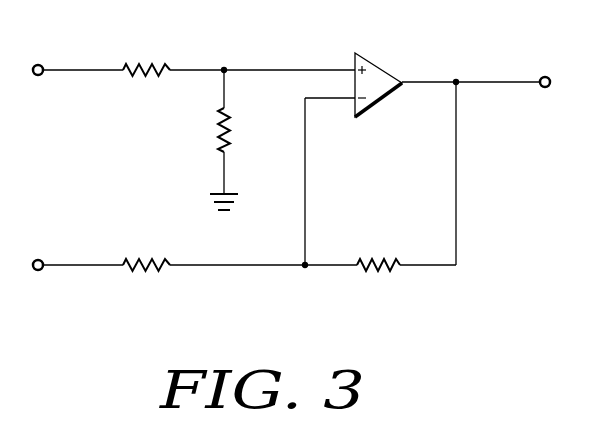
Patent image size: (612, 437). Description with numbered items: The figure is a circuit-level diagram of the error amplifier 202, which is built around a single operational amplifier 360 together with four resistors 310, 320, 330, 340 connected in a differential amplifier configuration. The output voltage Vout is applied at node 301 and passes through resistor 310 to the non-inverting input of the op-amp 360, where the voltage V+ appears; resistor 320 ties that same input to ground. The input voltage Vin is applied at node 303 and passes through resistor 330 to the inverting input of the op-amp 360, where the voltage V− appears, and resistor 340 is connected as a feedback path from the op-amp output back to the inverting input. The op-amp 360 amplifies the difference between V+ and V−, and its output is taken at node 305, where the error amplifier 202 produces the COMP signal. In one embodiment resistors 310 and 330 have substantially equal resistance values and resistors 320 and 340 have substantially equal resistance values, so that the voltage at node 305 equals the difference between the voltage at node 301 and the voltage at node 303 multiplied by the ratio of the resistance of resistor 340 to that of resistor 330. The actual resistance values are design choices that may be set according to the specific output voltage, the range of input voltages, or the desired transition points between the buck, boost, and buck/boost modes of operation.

The error amplifier 202 is at (555, 321).
The node 301 is at (38, 64).
The node 303 is at (38, 259).
The node 305 is at (545, 76).
The resistor 310 is at (151, 80).
The resistor 320 is at (231, 116).
The resistor 330 is at (151, 275).
The resistor 340 is at (382, 275).
The operational amplifier 360 is at (380, 101).